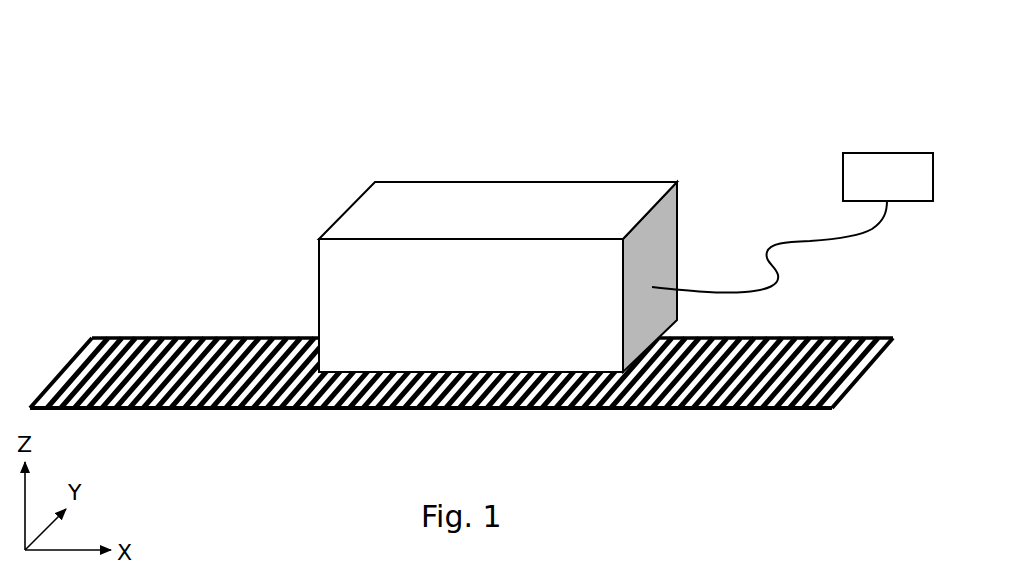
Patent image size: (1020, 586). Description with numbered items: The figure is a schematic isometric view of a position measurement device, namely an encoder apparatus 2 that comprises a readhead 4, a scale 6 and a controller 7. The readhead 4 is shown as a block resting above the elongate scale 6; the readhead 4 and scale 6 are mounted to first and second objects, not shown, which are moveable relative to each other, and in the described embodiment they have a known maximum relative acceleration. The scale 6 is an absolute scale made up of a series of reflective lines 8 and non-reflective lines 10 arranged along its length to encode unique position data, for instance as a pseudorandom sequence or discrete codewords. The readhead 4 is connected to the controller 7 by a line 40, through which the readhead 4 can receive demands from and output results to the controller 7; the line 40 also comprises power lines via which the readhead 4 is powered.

The encoder apparatus 2 is at (811, 68).
The readhead 4 is at (488, 320).
The scale 6 is at (869, 324).
The controller 7 is at (896, 191).
The reflective lines 8 is at (145, 342).
The non-reflective lines 10 is at (187, 399).
The line 40 is at (846, 233).